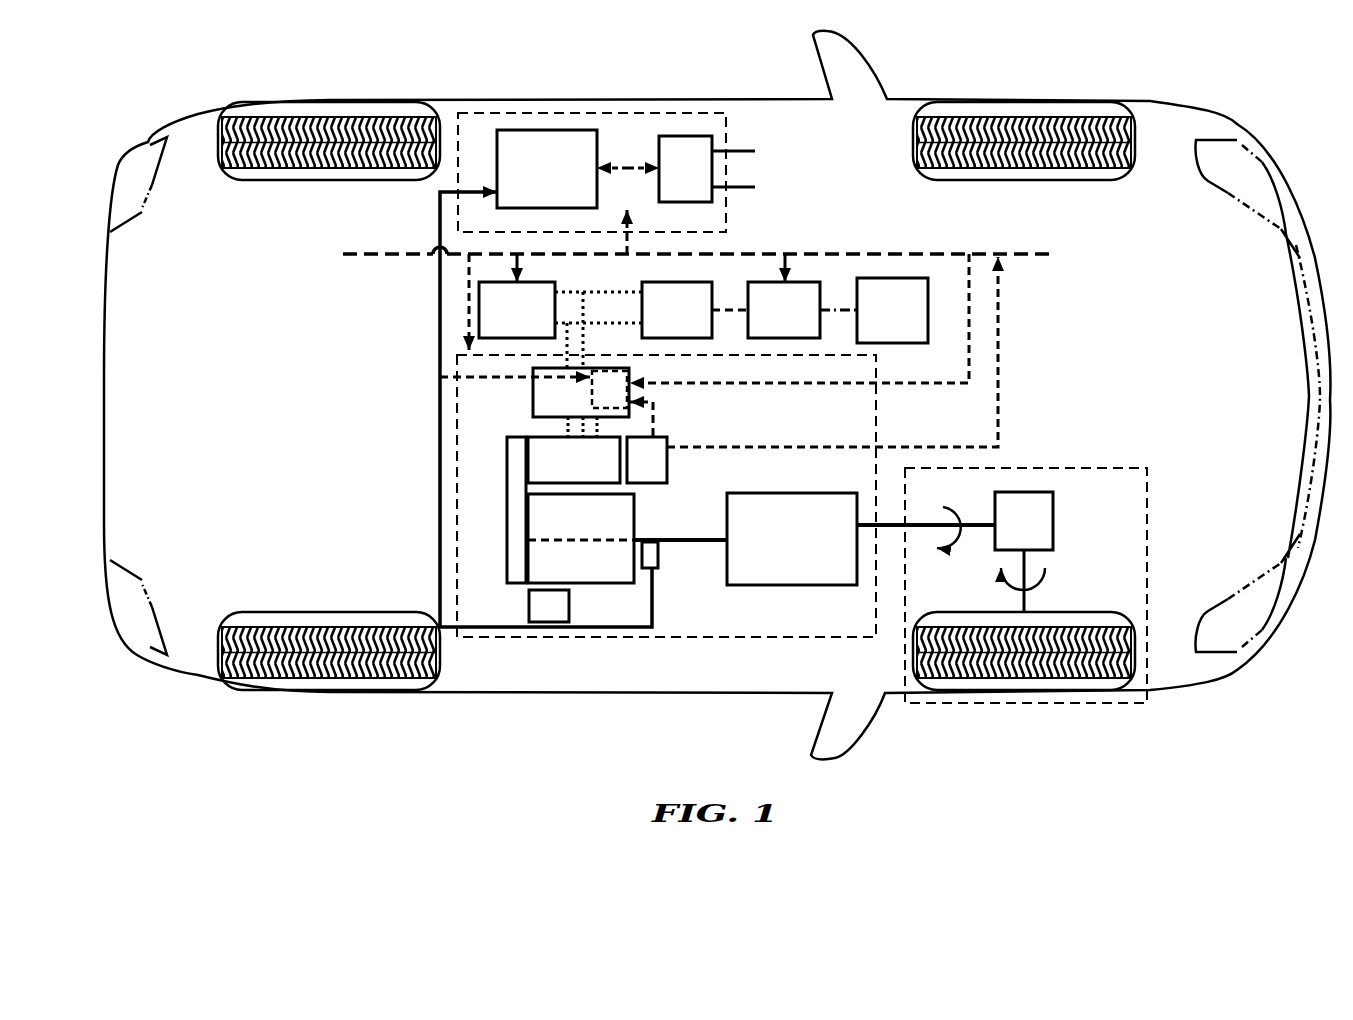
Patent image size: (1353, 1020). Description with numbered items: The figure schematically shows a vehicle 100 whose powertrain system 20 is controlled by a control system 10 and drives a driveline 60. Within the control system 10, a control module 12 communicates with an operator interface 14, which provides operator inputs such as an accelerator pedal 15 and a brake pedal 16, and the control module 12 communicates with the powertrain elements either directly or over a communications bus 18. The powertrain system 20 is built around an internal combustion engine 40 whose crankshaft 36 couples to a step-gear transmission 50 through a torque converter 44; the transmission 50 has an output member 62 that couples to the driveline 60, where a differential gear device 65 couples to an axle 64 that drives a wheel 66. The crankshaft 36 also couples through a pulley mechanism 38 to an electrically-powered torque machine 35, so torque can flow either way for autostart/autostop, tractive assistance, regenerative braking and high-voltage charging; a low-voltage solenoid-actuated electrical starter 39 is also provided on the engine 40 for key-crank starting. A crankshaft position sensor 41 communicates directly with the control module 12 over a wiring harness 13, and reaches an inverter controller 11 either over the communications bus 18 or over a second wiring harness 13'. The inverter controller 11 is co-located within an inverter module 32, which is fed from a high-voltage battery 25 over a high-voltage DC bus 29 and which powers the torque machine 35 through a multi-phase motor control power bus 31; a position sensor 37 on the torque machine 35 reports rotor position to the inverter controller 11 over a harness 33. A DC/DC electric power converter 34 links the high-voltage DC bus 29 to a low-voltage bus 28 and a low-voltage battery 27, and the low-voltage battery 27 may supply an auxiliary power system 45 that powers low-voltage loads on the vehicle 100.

The vehicle 100 is at (1117, 226).
The control system 10 is at (488, 139).
The inverter controller 11 is at (621, 403).
The control module 12 is at (534, 183).
The wiring harness 13 is at (512, 409).
The second wiring harness 13' is at (486, 390).
The operator interface 14 is at (673, 183).
The accelerator pedal 15 is at (783, 166).
The brake pedal 16 is at (783, 201).
The communications bus 18 is at (375, 250).
The powertrain system 20 is at (878, 403).
The high-voltage battery 25 is at (504, 324).
The low-voltage battery 27 is at (771, 324).
The low-voltage bus 28 is at (733, 308).
The high-voltage DC bus 29 is at (612, 292).
The multi-phase motor control power bus 31 is at (565, 428).
The inverter module 32 is at (569, 407).
The harness 33 is at (660, 425).
The DC/DC electric power converter 34 is at (664, 324).
The electrically-powered torque machine 35 is at (561, 474).
The crankshaft 36 is at (595, 540).
The position sensor 37 is at (635, 474).
The pulley mechanism 38 is at (507, 512).
The low-voltage solenoid-actuated electrical starter 39 is at (529, 607).
The internal combustion engine 40 is at (568, 574).
The crankshaft position sensor 41 is at (655, 565).
The torque converter 44 is at (713, 542).
The auxiliary power system 45 is at (879, 324).
The step-gear transmission 50 is at (779, 552).
The driveline 60 is at (1058, 468).
The output member 62 is at (893, 520).
The axle 64 is at (1033, 572).
The differential gear device 65 is at (1011, 532).
The wheel 66 is at (985, 612).